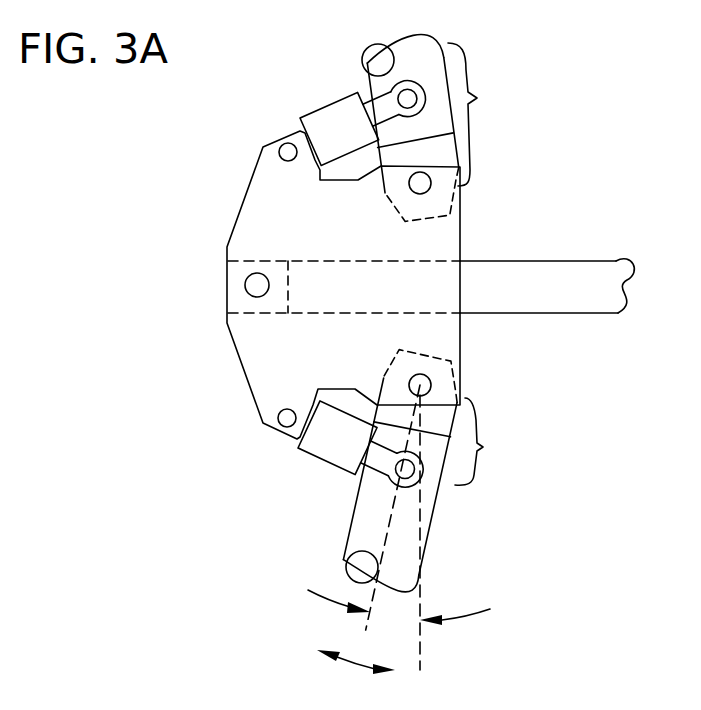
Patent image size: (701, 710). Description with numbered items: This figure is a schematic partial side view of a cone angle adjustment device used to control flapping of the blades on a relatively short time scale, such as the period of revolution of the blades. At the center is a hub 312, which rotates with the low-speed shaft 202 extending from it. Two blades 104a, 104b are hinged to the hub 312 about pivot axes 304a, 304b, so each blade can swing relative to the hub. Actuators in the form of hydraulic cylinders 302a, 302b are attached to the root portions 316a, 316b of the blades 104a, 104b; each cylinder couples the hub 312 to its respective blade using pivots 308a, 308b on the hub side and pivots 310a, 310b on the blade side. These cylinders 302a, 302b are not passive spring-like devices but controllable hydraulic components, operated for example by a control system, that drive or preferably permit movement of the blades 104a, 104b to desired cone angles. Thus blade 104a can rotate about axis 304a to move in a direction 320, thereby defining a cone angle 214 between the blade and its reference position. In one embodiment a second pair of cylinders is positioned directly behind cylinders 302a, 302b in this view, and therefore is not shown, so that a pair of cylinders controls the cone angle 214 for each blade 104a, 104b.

The blade 104a is at (428, 541).
The blade 104b is at (450, 122).
The low-speed shaft 202 is at (590, 314).
The cone angle 214 is at (462, 616).
The hydraulic cylinder 302a is at (313, 458).
The hydraulic cylinder 302b is at (346, 97).
The pivot axis 304a is at (450, 383).
The pivot axis 304b is at (456, 187).
The pivot 308a is at (276, 428).
The pivot 308b is at (283, 143).
The pivot 310a is at (403, 470).
The pivot 310b is at (406, 97).
The hub 312 is at (245, 193).
The root portion 316a is at (498, 441).
The root portion 316b is at (491, 114).
The direction 320 is at (355, 665).